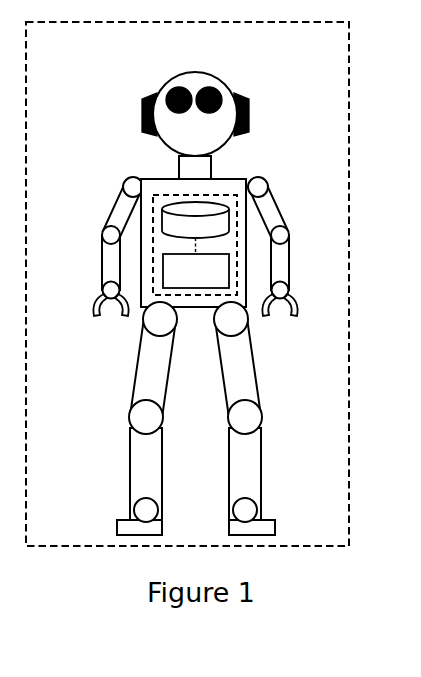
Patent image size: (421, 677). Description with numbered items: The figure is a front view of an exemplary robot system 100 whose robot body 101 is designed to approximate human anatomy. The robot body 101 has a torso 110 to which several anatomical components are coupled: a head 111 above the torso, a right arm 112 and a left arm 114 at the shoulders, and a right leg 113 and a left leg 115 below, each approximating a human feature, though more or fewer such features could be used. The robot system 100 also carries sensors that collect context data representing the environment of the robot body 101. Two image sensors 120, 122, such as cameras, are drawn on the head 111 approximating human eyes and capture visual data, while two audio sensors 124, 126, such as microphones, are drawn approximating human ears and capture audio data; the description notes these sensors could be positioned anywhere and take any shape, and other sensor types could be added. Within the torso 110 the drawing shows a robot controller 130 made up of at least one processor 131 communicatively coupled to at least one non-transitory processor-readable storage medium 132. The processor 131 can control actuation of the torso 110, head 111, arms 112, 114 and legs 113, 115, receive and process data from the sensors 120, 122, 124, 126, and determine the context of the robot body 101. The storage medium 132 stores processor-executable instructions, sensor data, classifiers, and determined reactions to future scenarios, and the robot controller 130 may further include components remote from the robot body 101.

The robot system 100 is at (375, 76).
The robot body 101 is at (70, 51).
The torso 110 is at (202, 225).
The head 111 is at (192, 105).
The right arm 112 is at (104, 266).
The right leg 113 is at (132, 464).
The left arm 114 is at (286, 265).
The left leg 115 is at (259, 465).
The image sensor 120 is at (180, 88).
The image sensor 122 is at (210, 87).
The audio sensor 124 is at (142, 115).
The audio sensor 126 is at (248, 115).
The robot controller 130 is at (221, 219).
The processor 131 is at (211, 284).
The non-transitory processor-readable storage medium 132 is at (211, 234).